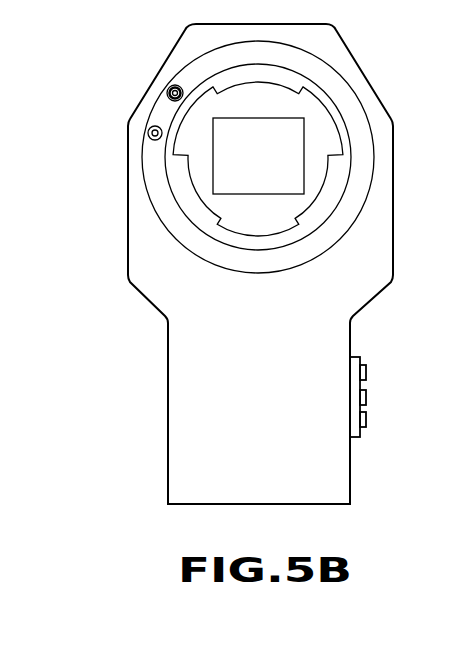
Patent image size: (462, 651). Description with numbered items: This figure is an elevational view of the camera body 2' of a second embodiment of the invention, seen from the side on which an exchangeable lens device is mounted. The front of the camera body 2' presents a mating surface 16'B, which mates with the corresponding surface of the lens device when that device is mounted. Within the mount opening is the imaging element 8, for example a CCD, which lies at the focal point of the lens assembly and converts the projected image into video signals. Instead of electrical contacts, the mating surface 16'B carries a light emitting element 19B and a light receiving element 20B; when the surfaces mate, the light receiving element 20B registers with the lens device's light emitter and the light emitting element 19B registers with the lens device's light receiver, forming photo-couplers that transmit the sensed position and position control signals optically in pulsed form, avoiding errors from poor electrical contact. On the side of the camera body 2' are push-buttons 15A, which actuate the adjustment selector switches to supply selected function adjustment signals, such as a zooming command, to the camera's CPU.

The camera body 2' is at (240, 264).
The mating surface 16'B is at (292, 157).
The imaging element 8 is at (294, 168).
The light receiving element 20B is at (167, 91).
The light emitting element 19B is at (148, 133).
The push-buttons 15A is at (367, 383).